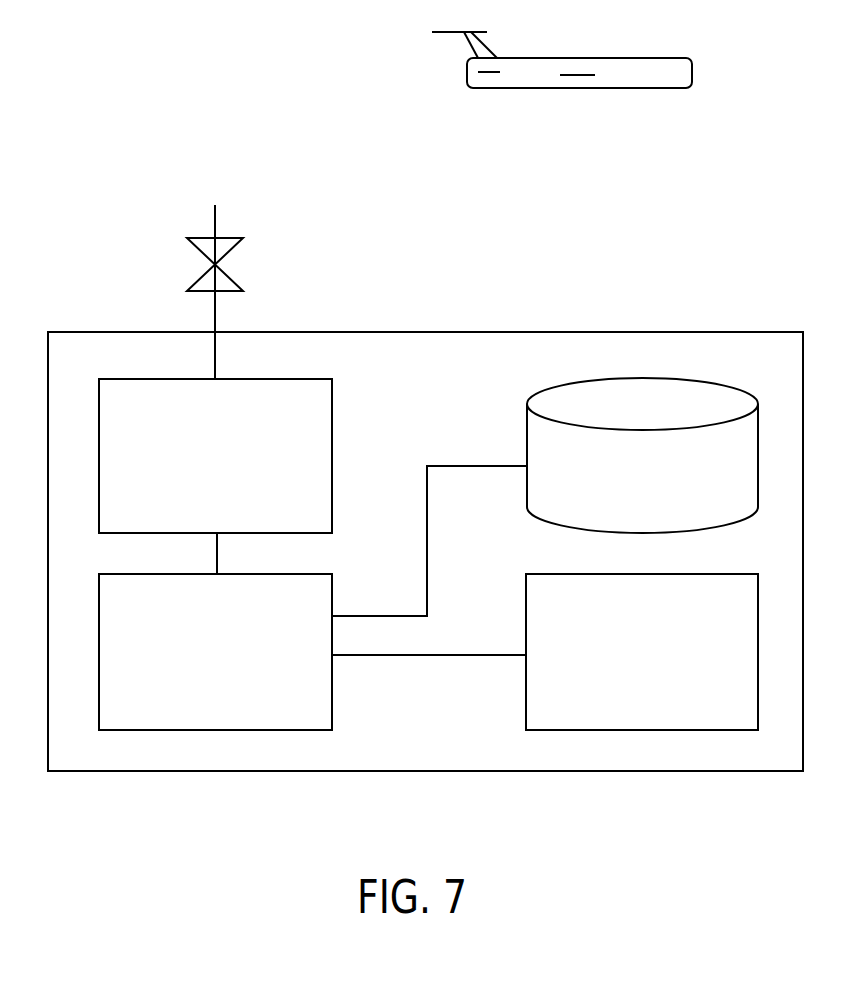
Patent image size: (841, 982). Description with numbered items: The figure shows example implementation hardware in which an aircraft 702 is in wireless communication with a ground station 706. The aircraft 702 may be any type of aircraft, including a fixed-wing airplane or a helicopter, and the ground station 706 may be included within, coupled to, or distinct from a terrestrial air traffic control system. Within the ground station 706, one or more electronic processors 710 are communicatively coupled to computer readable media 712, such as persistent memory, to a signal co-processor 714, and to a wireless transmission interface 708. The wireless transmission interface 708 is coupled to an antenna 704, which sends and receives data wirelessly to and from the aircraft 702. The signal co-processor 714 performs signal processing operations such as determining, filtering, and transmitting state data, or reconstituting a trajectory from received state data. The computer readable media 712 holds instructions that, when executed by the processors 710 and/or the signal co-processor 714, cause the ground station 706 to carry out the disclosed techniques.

The aircraft 702 is at (693, 70).
The antenna 704 is at (243, 238).
The ground station 706 is at (165, 771).
The wireless transmission interface 708 is at (332, 445).
The electronic processor 710 is at (332, 690).
The computer readable media 712 is at (527, 445).
The signal co-processor 714 is at (526, 628).